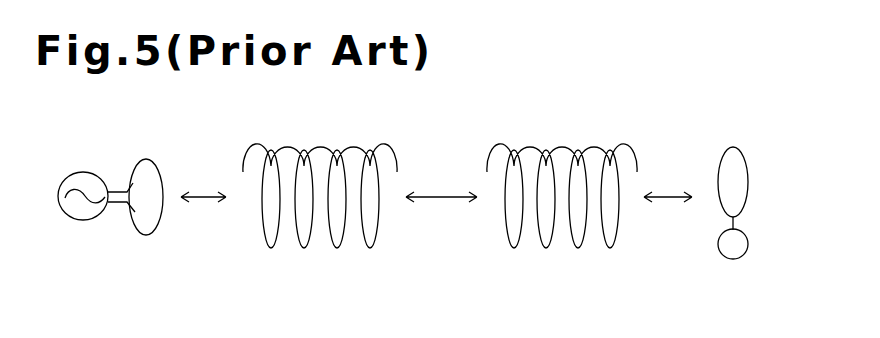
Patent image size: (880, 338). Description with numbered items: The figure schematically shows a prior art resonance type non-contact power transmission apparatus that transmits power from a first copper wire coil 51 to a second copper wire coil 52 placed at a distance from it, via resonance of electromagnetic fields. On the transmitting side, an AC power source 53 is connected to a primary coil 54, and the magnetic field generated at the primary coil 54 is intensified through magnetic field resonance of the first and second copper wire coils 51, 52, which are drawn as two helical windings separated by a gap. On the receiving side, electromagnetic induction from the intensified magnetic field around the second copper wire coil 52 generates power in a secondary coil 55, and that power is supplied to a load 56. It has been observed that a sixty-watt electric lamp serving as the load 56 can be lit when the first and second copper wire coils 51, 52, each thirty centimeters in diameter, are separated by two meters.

The first copper wire coil 51 is at (288, 147).
The second copper wire coil 52 is at (595, 148).
The AC power source 53 is at (83, 172).
The primary coil 54 is at (147, 159).
The secondary coil 55 is at (733, 147).
The load 56 is at (733, 259).